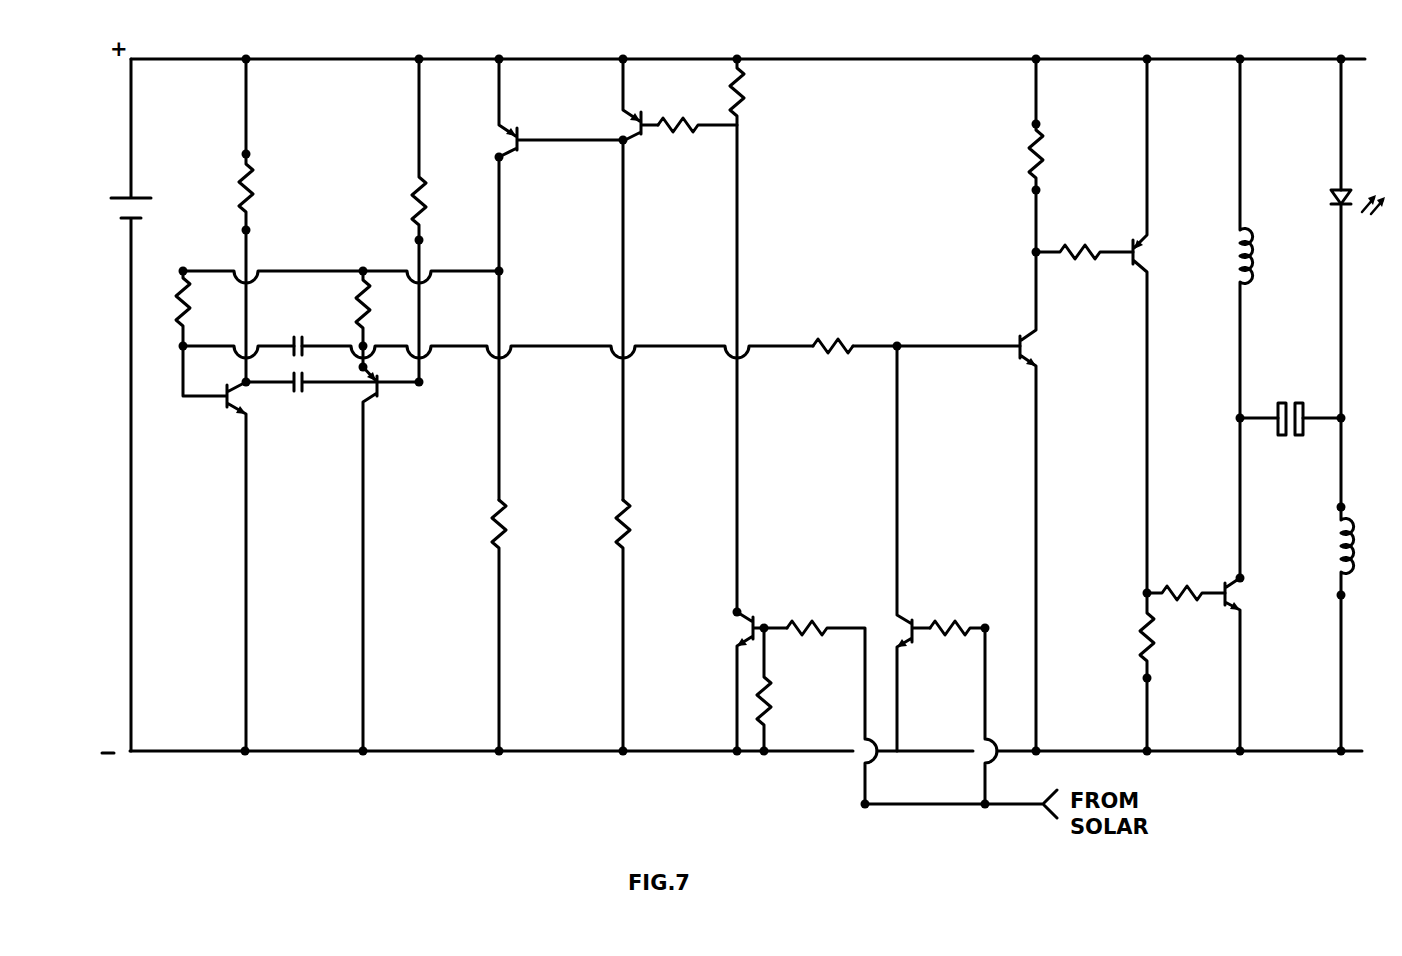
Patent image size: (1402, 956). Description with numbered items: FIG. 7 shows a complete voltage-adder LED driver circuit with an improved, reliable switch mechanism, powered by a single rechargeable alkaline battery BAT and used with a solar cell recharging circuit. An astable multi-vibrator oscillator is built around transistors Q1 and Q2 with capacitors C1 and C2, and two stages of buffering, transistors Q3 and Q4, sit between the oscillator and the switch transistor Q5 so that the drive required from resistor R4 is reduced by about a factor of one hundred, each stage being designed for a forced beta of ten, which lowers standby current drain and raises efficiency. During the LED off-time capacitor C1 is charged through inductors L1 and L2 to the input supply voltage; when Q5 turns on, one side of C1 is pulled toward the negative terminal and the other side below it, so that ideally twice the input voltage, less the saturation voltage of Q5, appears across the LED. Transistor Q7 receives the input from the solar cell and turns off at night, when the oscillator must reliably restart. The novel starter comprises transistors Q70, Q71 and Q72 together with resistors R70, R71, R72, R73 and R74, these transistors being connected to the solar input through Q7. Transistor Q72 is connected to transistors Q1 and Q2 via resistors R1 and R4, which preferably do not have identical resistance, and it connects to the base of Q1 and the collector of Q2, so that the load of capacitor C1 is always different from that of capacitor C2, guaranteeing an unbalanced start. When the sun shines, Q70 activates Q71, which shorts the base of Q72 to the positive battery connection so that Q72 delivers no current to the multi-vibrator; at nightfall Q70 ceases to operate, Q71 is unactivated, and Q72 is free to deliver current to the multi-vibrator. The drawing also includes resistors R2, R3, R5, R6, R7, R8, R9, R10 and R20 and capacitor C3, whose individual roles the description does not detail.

The battery BAT is at (132, 405).
The resistor R1 is at (172, 308).
The resistor R2 is at (267, 220).
The resistor R3 is at (406, 223).
The resistor R4 is at (351, 319).
The resistor R5 is at (833, 331).
The resistor R6 is at (1057, 155).
The resistor R7 is at (1083, 239).
The resistor R8 is at (1135, 672).
The resistor R9 is at (963, 695).
The resistor R10 is at (1184, 572).
The resistor R20 is at (832, 712).
The resistor R70 is at (793, 689).
The resistor R71 is at (767, 335).
The resistor R72 is at (697, 110).
The resistor R73 is at (651, 625).
The resistor R74 is at (527, 625).
The capacitor C1 is at (299, 330).
The capacitor C2 is at (311, 401).
The capacitor C3 is at (1291, 438).
The transistor Q1 is at (217, 548).
The transistor Q2 is at (389, 557).
The transistor Q3 is at (1047, 501).
The transistor Q4 is at (1158, 326).
The switch transistor Q5 is at (1251, 584).
The solar transistor Q7 is at (915, 548).
The transistor Q70 is at (736, 680).
The transistor Q71 is at (649, 279).
The transistor Q72 is at (559, 279).
The inductor L1 is at (1232, 238).
The inductor L2 is at (1363, 584).
The element LED is at (1362, 238).